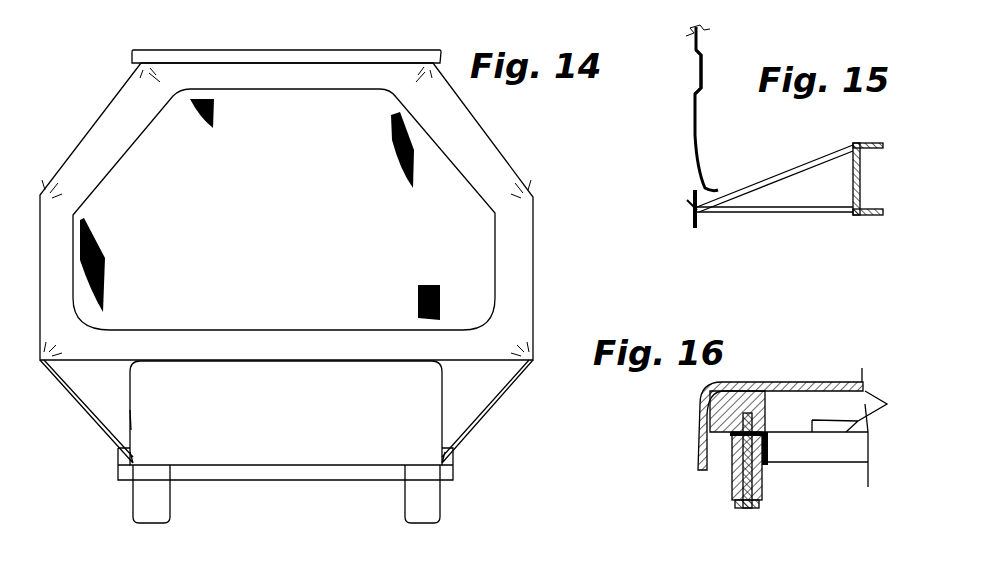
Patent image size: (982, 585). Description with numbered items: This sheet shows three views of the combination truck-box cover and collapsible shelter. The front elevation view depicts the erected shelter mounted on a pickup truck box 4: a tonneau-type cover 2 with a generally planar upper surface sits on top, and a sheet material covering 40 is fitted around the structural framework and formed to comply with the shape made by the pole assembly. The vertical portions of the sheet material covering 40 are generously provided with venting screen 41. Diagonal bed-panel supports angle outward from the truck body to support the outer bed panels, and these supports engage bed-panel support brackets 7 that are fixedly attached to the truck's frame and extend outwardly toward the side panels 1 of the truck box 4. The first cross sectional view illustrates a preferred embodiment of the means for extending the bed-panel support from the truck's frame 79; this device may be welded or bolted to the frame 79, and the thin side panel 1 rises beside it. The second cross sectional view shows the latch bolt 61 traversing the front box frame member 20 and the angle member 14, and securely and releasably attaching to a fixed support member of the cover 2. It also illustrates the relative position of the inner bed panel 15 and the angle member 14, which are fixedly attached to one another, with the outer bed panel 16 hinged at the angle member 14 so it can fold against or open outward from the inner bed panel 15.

In FIG. 15, the side panel 1 is at (693, 138).
In FIG. 14, the tonneau-type cover 2 is at (188, 60).
In FIG. 16, the tonneau-type cover 2 is at (757, 382).
In FIG. 14, the truck box 4 is at (125, 415).
In FIG. 15, the truck box 4 is at (683, 90).
In FIG. 15, the bed-panel support bracket 7 is at (692, 204).
In FIG. 16, the angle member 14 is at (770, 455).
In FIG. 16, the inner bed panel 15 is at (836, 450).
In FIG. 16, the outer bed panel 16 is at (823, 420).
In FIG. 16, the central box frame member 20 is at (732, 487).
In FIG. 14, the sheet material covering 40 is at (498, 166).
In FIG. 14, the venting screen 41 is at (485, 268).
In FIG. 16, the latch bolt 61 is at (752, 510).
In FIG. 15, the truck frame 79 is at (870, 215).